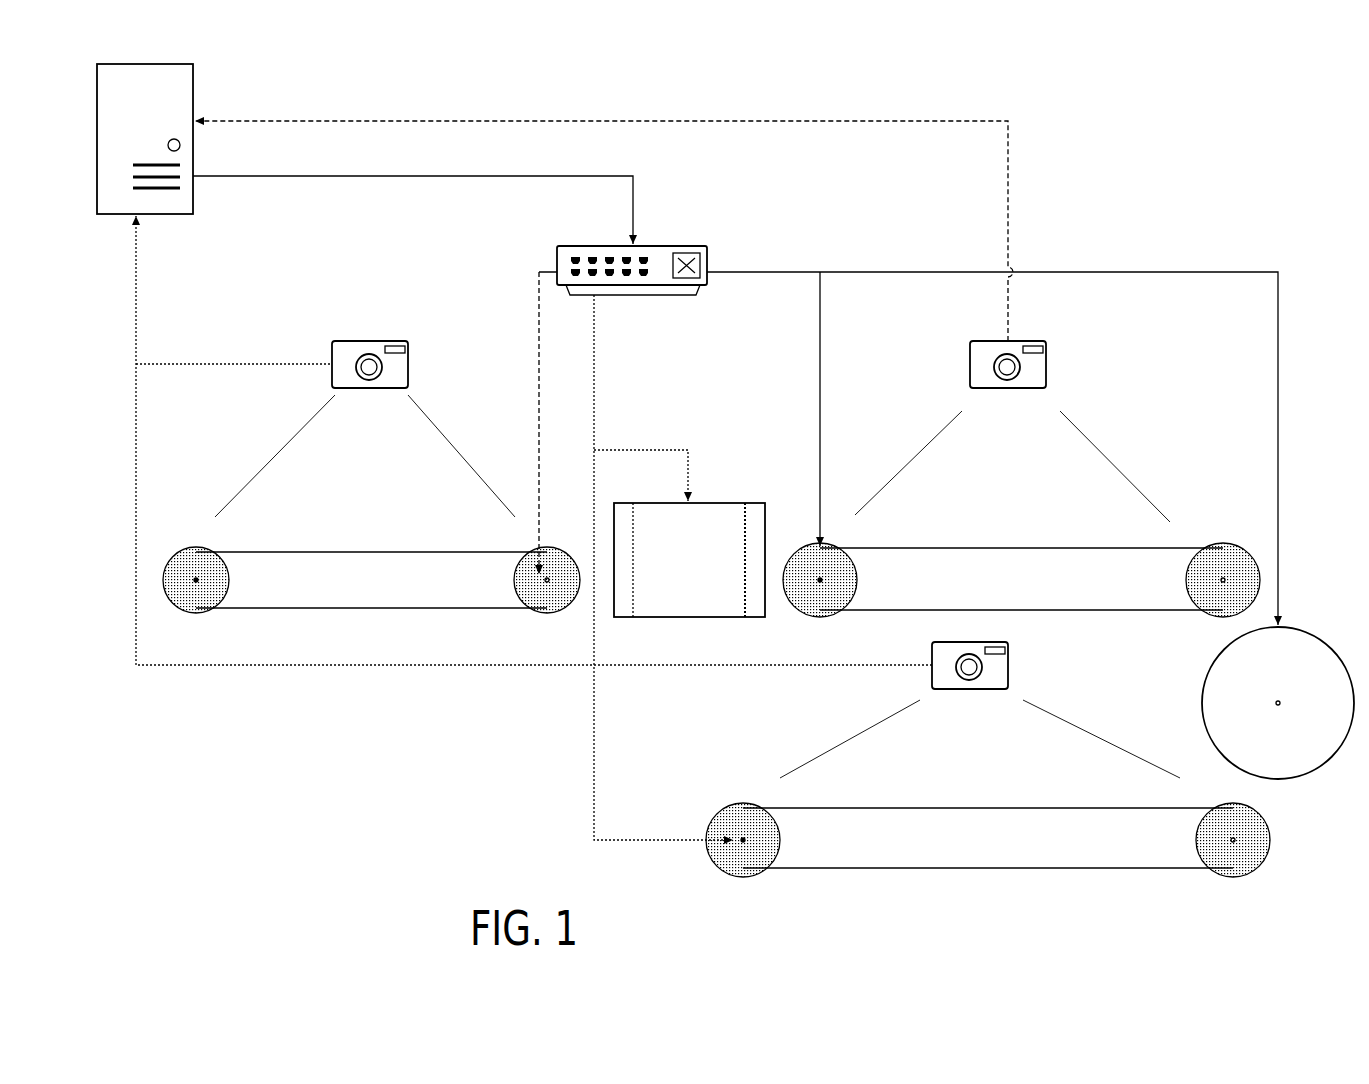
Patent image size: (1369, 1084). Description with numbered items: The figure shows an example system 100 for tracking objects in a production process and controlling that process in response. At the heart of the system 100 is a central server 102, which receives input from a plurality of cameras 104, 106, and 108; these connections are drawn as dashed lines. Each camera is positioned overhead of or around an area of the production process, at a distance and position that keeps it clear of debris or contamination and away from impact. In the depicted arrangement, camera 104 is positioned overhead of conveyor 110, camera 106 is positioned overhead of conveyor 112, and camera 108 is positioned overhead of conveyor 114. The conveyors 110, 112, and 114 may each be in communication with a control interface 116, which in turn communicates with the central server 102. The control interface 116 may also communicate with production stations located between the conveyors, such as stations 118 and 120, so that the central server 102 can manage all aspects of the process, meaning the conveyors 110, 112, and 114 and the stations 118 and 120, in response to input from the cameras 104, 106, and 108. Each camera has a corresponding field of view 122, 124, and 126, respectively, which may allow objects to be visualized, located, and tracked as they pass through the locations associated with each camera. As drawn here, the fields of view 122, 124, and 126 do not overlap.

The system 100 is at (1153, 140).
The central server 102 is at (108, 86).
The camera 104 is at (340, 345).
The camera 106 is at (982, 356).
The camera 108 is at (936, 657).
The conveyor 110 is at (378, 598).
The conveyor 112 is at (1137, 600).
The conveyor 114 is at (985, 860).
The control interface 116 is at (570, 262).
The station 118 is at (716, 610).
The station 120 is at (1217, 702).
The field of view 122 is at (276, 450).
The field of view 124 is at (936, 438).
The field of view 126 is at (843, 742).